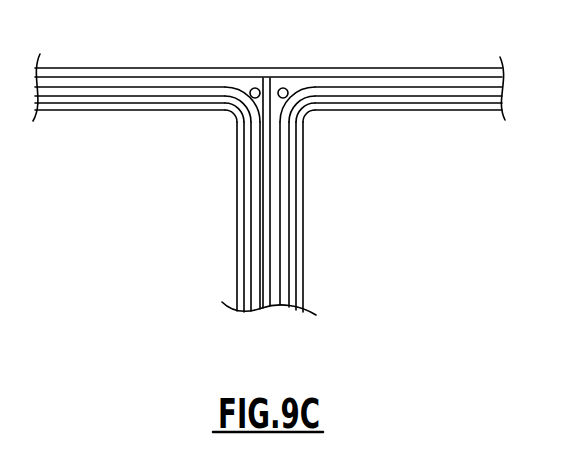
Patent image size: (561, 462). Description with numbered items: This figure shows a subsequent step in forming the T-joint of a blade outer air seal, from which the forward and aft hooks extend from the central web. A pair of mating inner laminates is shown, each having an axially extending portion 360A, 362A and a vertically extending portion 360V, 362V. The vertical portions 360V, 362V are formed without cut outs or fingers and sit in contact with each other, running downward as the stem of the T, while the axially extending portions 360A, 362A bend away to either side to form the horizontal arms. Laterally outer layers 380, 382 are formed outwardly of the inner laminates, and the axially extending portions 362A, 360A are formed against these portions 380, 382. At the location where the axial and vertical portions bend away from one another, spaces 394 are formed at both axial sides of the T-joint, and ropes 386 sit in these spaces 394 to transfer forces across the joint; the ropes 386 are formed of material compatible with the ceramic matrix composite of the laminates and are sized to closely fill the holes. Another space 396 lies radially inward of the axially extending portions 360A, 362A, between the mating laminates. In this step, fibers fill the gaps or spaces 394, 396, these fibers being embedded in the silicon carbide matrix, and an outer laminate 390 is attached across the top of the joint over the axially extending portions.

The axially extending portion of laminate 360A is at (407, 80).
The axially extending portion of laminate 362A is at (110, 80).
The outer laminate 390 is at (177, 67).
The ropes 386 is at (254, 88).
The space 396 is at (275, 85).
The spaces 394 is at (233, 100).
The laterally outer layer 380 is at (237, 203).
The laterally outer layer 382 is at (303, 203).
The vertically extending portion of laminate 360V is at (262, 283).
The vertically extending portion of laminate 362V is at (273, 266).